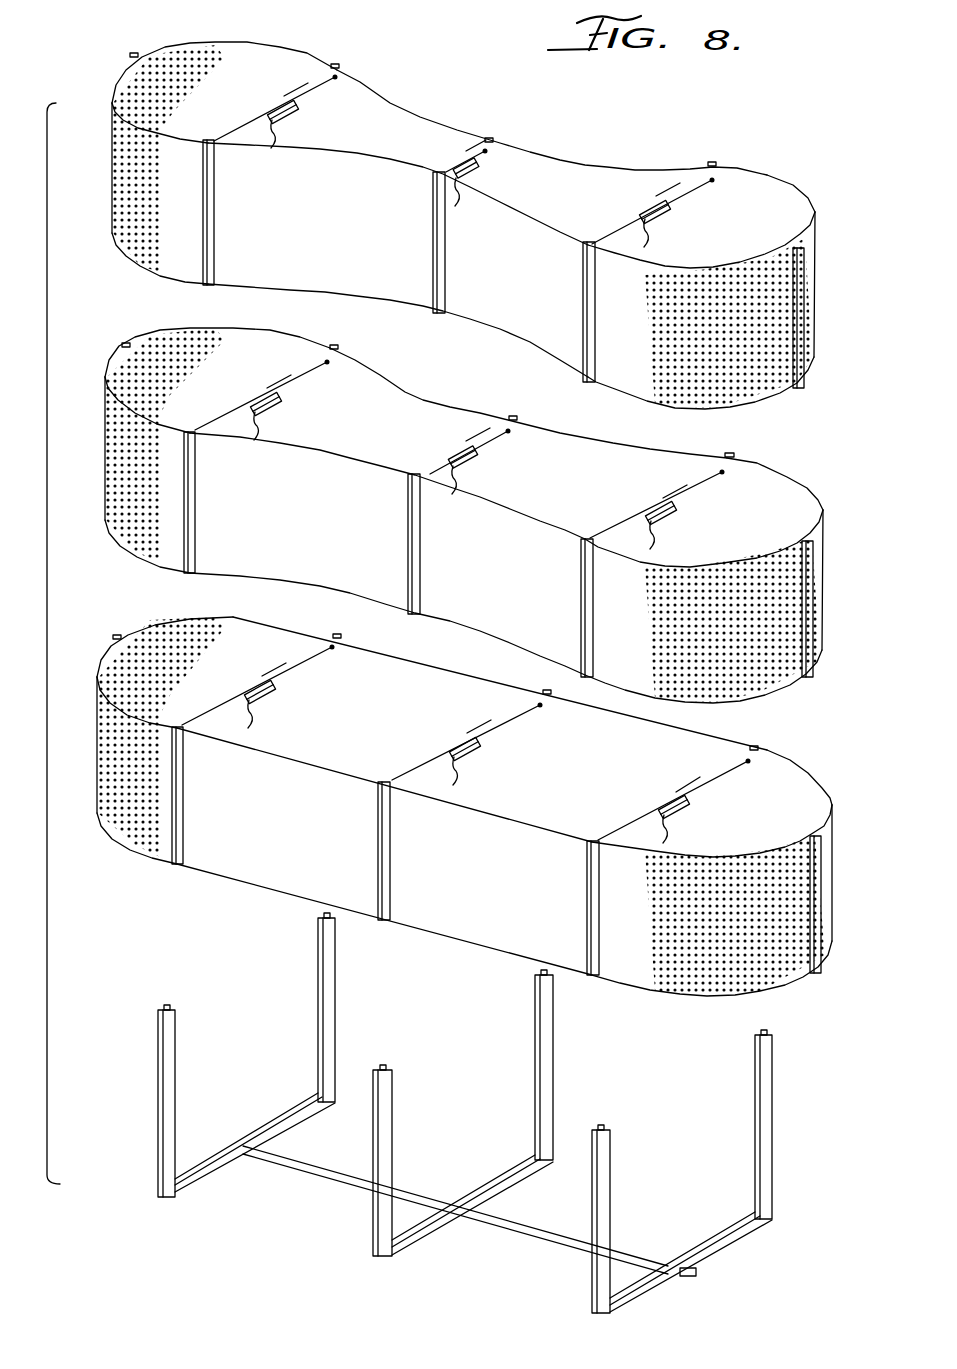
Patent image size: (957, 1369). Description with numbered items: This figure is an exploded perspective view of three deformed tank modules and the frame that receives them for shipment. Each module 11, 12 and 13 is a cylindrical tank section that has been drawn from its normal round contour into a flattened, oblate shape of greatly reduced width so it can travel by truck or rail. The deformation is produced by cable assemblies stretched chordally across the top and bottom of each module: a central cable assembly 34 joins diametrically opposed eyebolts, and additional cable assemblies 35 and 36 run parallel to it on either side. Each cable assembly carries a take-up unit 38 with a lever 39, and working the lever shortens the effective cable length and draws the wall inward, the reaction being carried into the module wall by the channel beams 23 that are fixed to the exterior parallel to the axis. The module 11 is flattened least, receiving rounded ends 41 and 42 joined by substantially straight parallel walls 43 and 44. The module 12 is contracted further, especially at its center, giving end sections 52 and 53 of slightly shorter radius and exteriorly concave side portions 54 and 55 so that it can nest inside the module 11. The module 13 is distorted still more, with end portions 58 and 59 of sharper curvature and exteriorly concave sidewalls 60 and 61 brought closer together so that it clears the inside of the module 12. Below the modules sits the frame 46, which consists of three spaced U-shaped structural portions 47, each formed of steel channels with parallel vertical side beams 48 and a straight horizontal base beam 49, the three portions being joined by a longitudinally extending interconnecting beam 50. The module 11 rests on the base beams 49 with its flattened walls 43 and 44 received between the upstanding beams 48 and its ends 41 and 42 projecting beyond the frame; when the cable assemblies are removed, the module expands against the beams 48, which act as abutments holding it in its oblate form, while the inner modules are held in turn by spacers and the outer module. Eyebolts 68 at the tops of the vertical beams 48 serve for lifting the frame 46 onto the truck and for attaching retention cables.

The module 11 is at (495, 794).
The module 12 is at (492, 507).
The module 13 is at (485, 213).
The channel beams 23 is at (214, 238).
The cable assembly 34 is at (483, 155).
The cable assembly 35 is at (316, 92).
The cable assembly 36 is at (687, 198).
The take-up unit 38 is at (288, 119).
The lever 39 is at (658, 202).
The rounded end 41 is at (148, 628).
The rounded end 42 is at (833, 845).
The wall 43 is at (657, 740).
The wall 44 is at (448, 930).
The frame 46 is at (474, 1113).
The U-shaped structural portion 47 is at (463, 1113).
The vertical side beam 48 is at (158, 1106).
The base beam 49 is at (195, 1183).
The interconnecting beam 50 is at (517, 1226).
The end section 52 is at (148, 348).
The end section 53 is at (823, 564).
The side portion 54 is at (543, 437).
The side portion 55 is at (318, 580).
The end portion 58 is at (145, 54).
The end portion 59 is at (812, 276).
The sidewall 60 is at (461, 137).
The sidewall 61 is at (475, 312).
The eyebolt 68 is at (166, 1004).